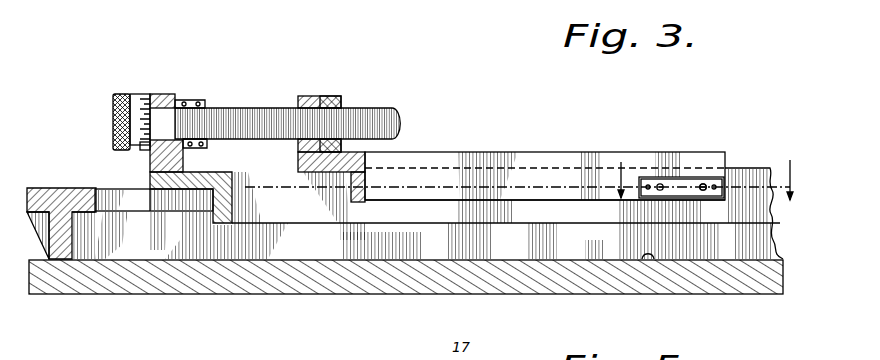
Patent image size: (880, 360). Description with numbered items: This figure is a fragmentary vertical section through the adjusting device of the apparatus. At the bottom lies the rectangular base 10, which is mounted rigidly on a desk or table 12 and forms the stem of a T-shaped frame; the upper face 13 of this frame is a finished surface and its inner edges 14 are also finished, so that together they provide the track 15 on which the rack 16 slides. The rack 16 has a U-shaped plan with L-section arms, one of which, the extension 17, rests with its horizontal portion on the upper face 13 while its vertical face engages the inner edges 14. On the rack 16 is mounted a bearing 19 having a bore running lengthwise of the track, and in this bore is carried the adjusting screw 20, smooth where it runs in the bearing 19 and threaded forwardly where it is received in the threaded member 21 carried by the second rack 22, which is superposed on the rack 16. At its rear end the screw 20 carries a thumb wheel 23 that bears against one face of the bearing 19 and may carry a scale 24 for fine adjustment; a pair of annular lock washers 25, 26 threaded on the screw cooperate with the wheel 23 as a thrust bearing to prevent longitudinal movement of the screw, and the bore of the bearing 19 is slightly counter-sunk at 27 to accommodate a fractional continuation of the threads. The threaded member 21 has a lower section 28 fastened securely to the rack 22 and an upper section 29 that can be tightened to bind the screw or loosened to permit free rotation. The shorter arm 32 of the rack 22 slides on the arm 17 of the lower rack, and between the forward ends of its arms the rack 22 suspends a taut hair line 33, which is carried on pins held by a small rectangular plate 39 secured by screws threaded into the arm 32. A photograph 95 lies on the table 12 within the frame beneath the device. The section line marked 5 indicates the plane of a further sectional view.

The section line 5- 5 is at (703, 180).
The rectangular base 10 is at (313, 242).
The desk or table 12 is at (355, 280).
The upper face 13 is at (62, 186).
The inner edges 14 is at (145, 206).
The track 15 is at (62, 237).
The rack 16 is at (202, 172).
The extension 17 is at (527, 207).
The bearing 19 is at (166, 98).
The adjusting screw 20 is at (245, 108).
The threaded member 21 is at (316, 94).
The second rack 22 is at (449, 156).
The thumb wheel 23 is at (124, 92).
The scale 24 is at (141, 146).
The annular lock washer 25 is at (189, 140).
The annular lock washer 26 is at (207, 146).
The counter-sunk portion 27 is at (183, 104).
The lower section 28 is at (335, 143).
The upper section 29 is at (332, 99).
The arm 32 is at (588, 155).
The hair line 33 is at (684, 183).
The plate 39 is at (682, 180).
The photograph 95 is at (646, 262).